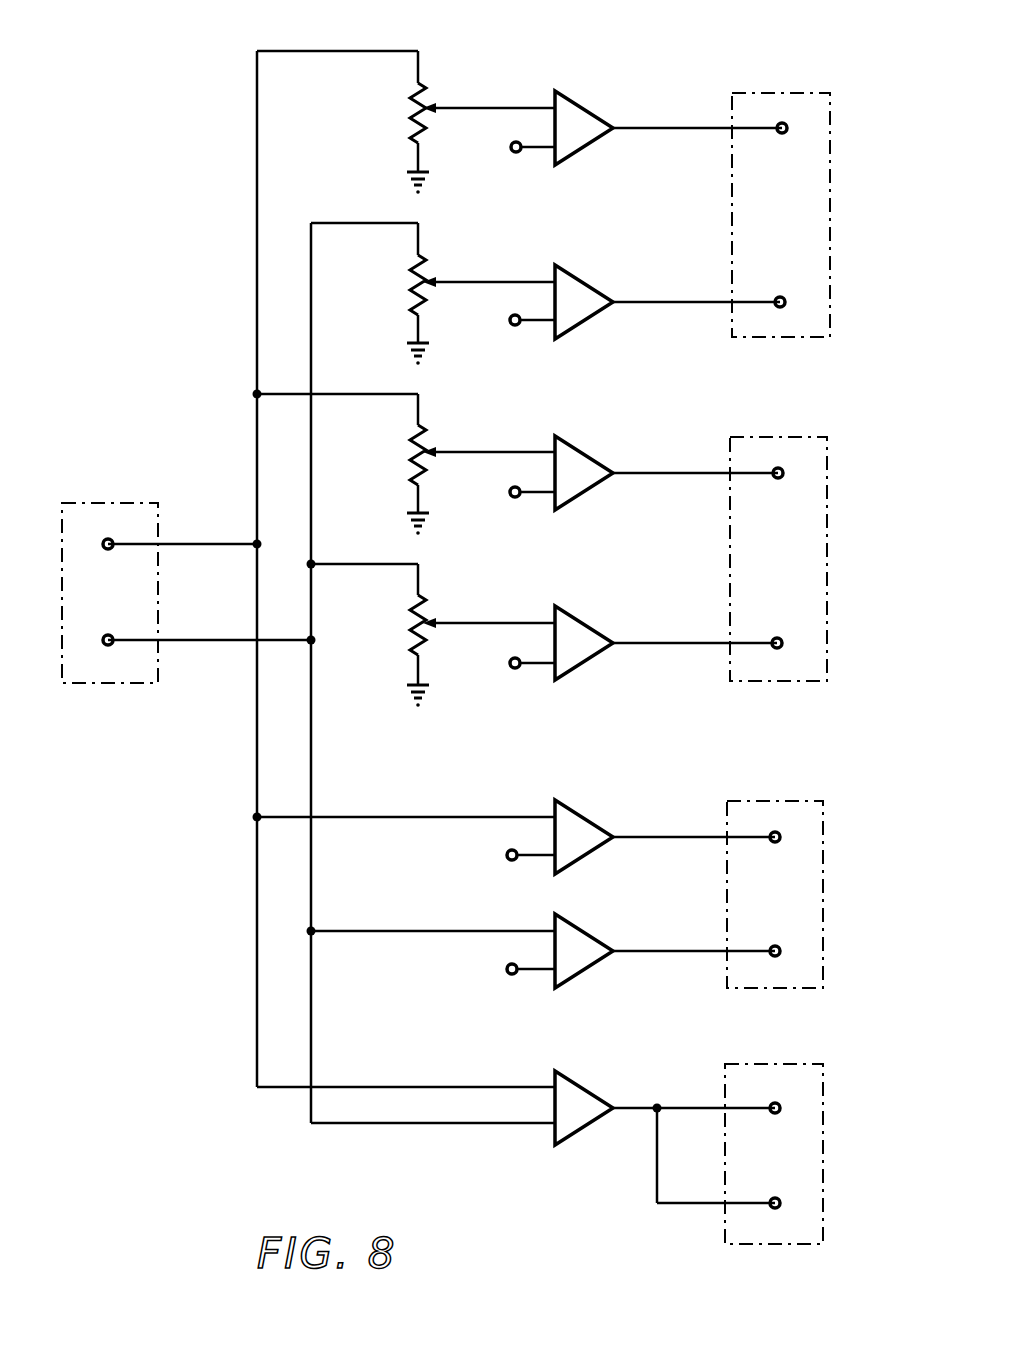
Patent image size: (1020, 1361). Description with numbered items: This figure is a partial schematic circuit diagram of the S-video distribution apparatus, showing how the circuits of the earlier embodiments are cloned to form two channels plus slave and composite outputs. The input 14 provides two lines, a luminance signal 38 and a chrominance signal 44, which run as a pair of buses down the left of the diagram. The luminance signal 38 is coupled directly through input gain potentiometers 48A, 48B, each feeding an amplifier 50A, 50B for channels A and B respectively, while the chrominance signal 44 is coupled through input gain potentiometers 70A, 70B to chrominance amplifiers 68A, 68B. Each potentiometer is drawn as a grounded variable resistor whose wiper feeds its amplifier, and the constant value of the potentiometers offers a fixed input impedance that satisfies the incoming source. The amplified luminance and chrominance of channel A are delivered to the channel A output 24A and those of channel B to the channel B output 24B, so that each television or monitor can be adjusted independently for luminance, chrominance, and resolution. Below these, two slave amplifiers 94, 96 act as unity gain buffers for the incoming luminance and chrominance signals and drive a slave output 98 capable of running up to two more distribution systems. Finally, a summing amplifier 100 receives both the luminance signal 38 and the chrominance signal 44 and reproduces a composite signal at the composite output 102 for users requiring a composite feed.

The input 14 is at (127, 502).
The luminance signal 38 is at (197, 543).
The chrominance signal 44 is at (222, 644).
The input gain potentiometer 48A is at (427, 92).
The input gain potentiometer 48B is at (408, 447).
The amplifier 50A is at (587, 103).
The amplifier 50B is at (580, 455).
The chrominance amplifier 68A is at (583, 279).
The chrominance amplifier 68B is at (585, 665).
The input gain potentiometer 70A is at (427, 298).
The input gain potentiometer 70B is at (427, 645).
The channel A output 24A is at (813, 93).
The channel B output 24B is at (792, 437).
The slave amplifier 94 is at (580, 817).
The slave amplifier 96 is at (585, 972).
The slave output 98 is at (757, 801).
The summing amplifier 100 is at (572, 1132).
The composite output 102 is at (752, 1064).